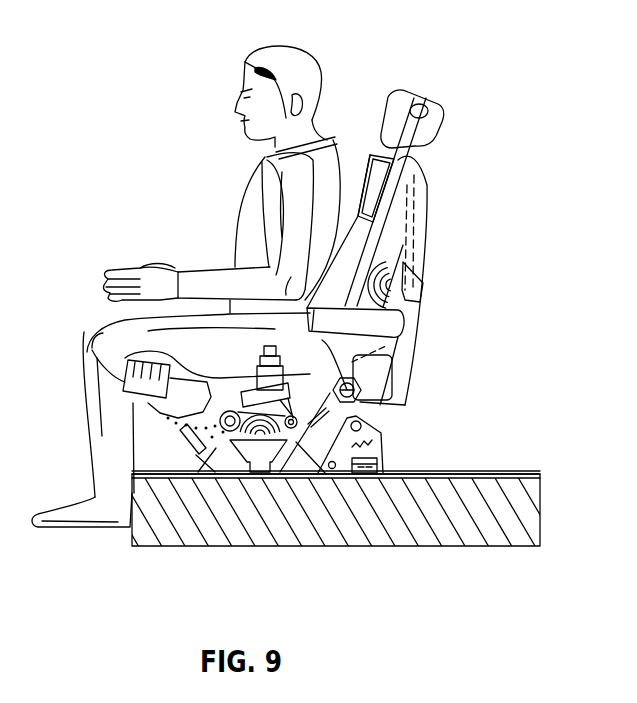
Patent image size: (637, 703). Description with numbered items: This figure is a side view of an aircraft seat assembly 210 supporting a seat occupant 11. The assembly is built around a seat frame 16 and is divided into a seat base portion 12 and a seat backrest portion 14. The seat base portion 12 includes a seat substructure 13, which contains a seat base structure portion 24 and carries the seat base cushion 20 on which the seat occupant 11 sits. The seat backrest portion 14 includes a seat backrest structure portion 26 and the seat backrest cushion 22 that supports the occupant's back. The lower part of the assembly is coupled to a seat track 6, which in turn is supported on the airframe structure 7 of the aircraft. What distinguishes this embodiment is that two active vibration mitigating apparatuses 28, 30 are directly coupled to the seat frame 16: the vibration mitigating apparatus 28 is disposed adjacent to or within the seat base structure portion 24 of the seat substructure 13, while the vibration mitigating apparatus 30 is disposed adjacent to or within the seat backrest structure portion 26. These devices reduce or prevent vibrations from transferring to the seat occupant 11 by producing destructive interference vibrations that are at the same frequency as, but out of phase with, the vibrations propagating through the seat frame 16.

The seat occupant 11 is at (306, 48).
The seat backrest cushion 22 is at (357, 177).
The seat backrest portion 14 is at (383, 205).
The aircraft seat assembly 210 is at (417, 242).
The vibration mitigating apparatus 30 is at (417, 293).
The seat backrest structure portion 26 is at (380, 350).
The seat base cushion 20 is at (127, 380).
The seat base portion 12 is at (145, 402).
The seat track 6 is at (452, 476).
The airframe structure 7 is at (530, 514).
The seat base structure portion 24 is at (213, 452).
The vibration mitigating apparatus 28 is at (245, 445).
The seat substructure 13 is at (252, 472).
The seat frame 16 is at (300, 457).